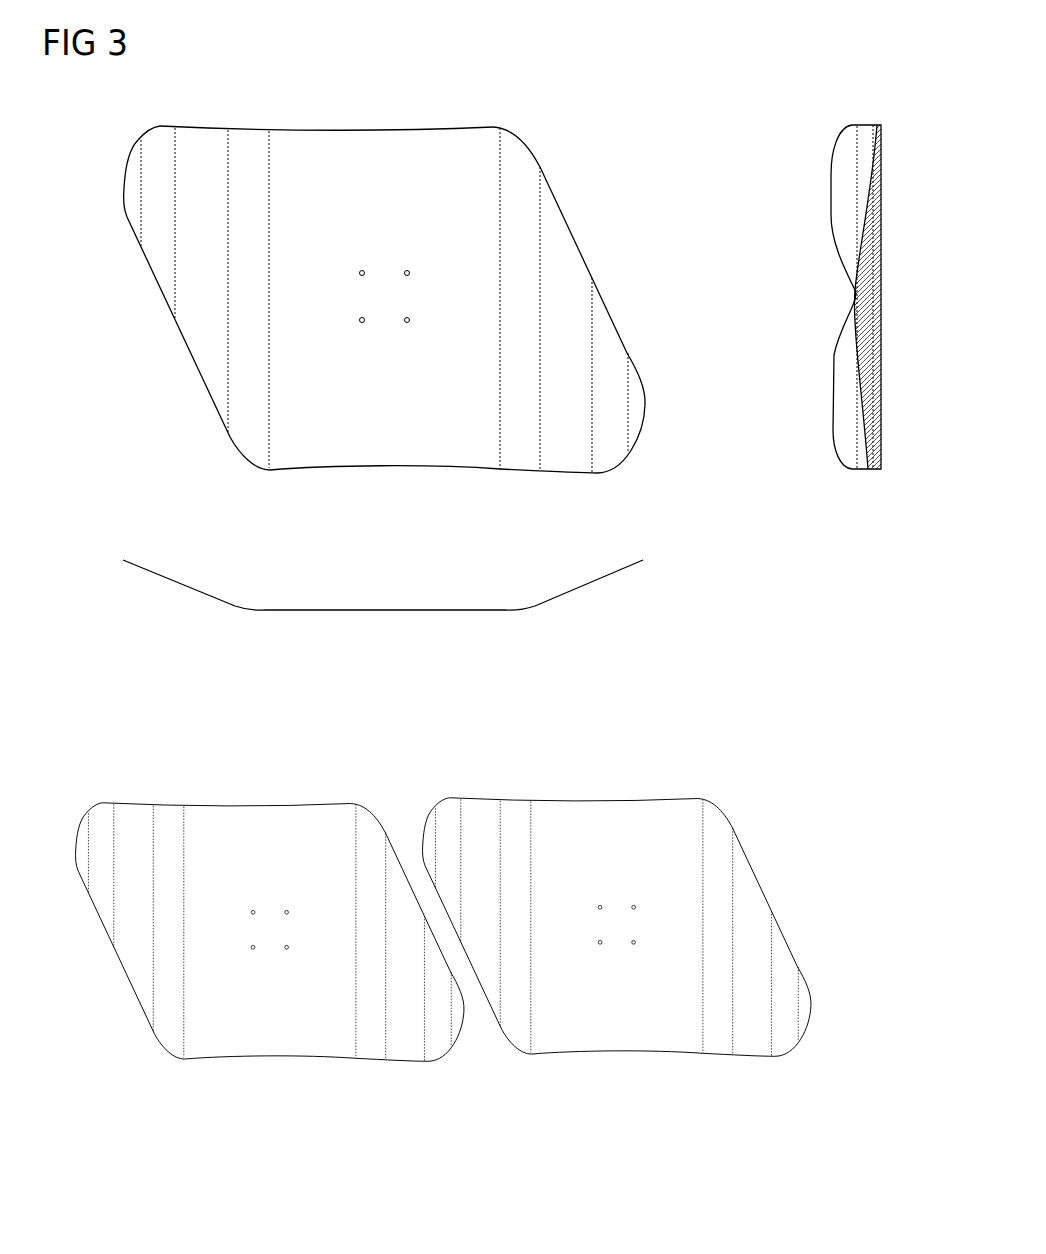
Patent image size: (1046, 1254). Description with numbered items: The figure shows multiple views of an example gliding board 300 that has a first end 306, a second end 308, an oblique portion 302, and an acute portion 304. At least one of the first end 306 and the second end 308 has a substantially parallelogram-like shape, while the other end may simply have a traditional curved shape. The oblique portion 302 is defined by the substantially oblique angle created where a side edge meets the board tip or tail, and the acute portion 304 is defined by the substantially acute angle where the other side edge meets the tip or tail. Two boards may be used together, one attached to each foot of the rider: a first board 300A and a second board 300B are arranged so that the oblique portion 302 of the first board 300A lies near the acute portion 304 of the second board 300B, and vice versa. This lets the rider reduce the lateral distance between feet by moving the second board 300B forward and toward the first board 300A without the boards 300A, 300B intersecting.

The board 300 is at (483, 329).
The oblique portion 302 is at (549, 151).
The acute portion 304 is at (654, 389).
The first end 306 is at (156, 342).
The second end 308 is at (625, 248).
The first board 300A is at (265, 786).
The second board 300B is at (565, 786).